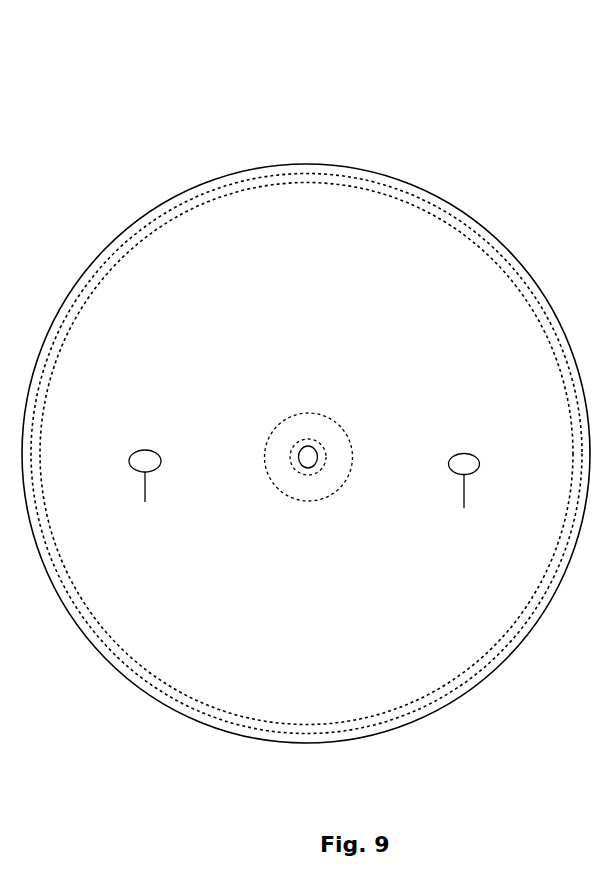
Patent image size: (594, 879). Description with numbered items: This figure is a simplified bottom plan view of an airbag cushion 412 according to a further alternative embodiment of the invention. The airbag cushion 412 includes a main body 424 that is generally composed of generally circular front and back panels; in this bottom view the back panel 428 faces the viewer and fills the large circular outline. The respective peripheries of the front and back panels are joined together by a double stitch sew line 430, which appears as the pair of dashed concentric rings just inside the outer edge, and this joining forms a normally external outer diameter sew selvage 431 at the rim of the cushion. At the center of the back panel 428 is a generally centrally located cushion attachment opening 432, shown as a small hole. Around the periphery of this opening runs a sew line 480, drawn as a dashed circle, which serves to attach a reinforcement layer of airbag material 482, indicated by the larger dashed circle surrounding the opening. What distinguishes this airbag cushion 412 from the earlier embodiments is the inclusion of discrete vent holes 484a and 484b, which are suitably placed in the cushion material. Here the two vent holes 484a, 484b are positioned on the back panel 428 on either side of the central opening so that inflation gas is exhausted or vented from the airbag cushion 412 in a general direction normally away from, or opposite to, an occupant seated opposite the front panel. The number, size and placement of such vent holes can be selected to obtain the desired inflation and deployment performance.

The airbag cushion 412 is at (440, 132).
The main body 424 is at (193, 232).
The outer diameter sew selvage 431 is at (524, 272).
The double stitch sew line 430 is at (453, 687).
The back panel 428 is at (167, 666).
The cushion attachment opening 432 is at (310, 450).
The sew line 480 is at (297, 475).
The reinforcement layer of airbag material 482 is at (333, 486).
The vent hole 484a is at (163, 495).
The vent hole 484b is at (471, 498).